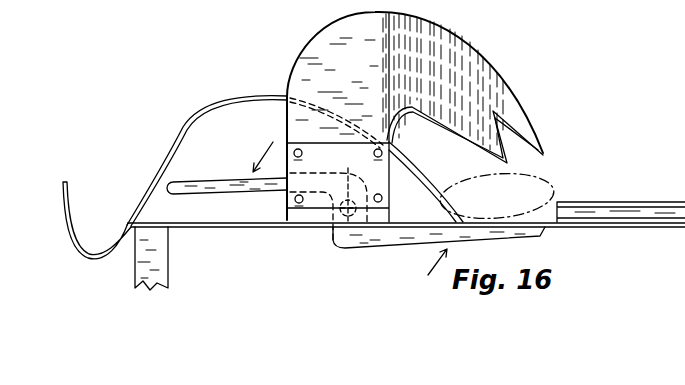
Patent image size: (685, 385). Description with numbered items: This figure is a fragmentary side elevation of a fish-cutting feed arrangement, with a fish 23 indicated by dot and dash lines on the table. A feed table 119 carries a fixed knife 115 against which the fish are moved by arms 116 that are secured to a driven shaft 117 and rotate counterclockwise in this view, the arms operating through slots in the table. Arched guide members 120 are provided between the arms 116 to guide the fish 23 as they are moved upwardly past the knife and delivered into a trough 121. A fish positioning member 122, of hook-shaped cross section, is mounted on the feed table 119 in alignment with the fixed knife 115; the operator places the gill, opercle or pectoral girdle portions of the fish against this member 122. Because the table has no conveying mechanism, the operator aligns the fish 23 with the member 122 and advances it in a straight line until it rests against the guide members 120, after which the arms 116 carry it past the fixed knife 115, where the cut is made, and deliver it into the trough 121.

The fish 23 is at (542, 192).
The fixed knife 115 is at (532, 119).
The arms 116 is at (423, 239).
The driven shaft 117 is at (321, 182).
The feed table 119 is at (211, 227).
The arched guide members 120 is at (239, 99).
The trough 121 is at (103, 217).
The fish positioning member 122 is at (629, 202).